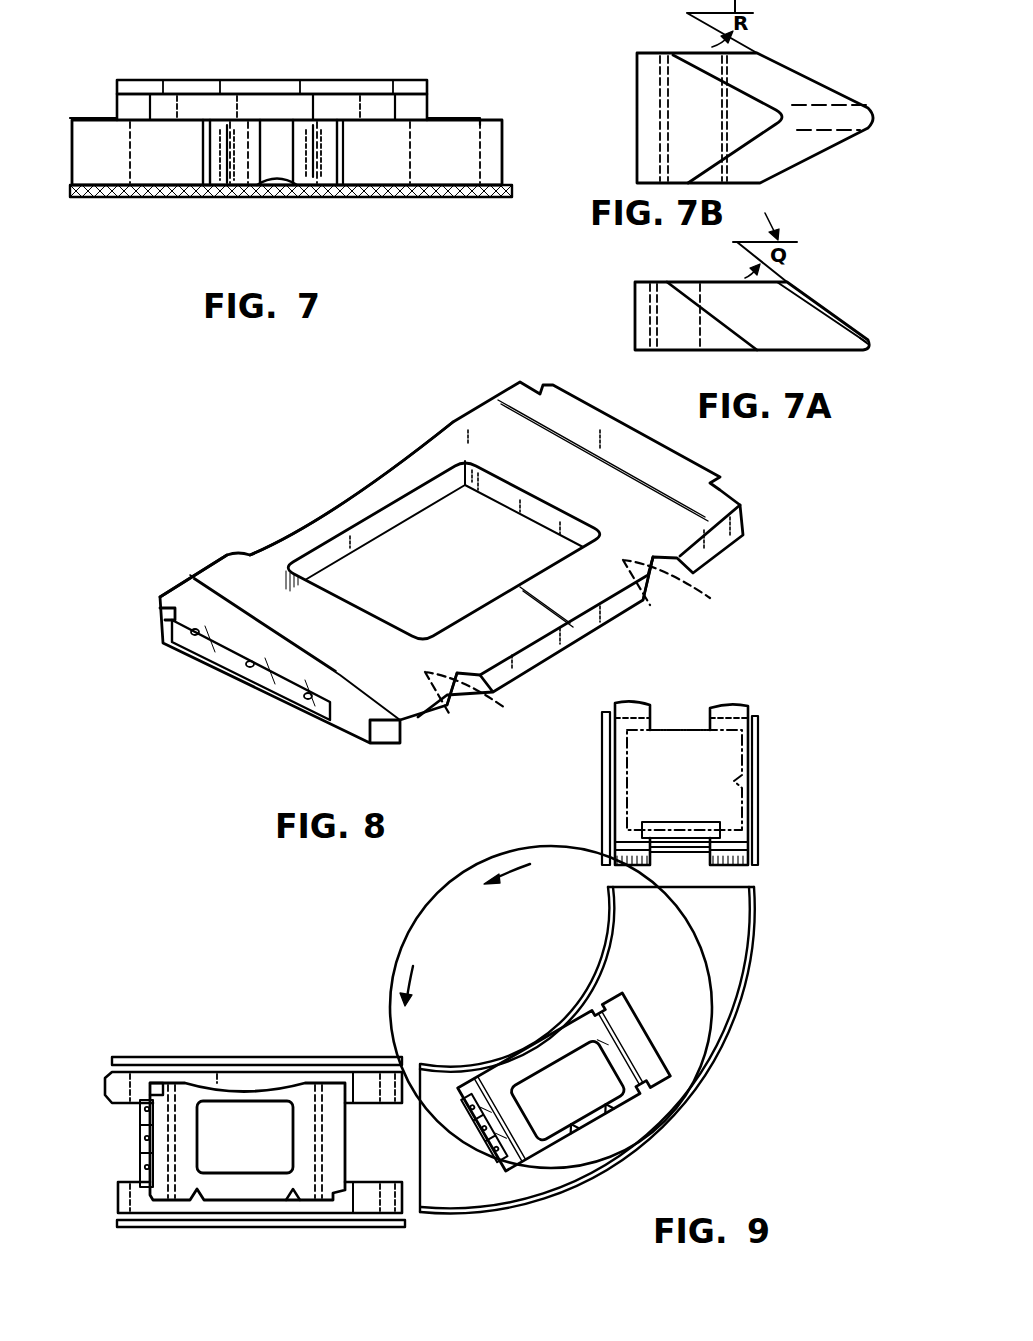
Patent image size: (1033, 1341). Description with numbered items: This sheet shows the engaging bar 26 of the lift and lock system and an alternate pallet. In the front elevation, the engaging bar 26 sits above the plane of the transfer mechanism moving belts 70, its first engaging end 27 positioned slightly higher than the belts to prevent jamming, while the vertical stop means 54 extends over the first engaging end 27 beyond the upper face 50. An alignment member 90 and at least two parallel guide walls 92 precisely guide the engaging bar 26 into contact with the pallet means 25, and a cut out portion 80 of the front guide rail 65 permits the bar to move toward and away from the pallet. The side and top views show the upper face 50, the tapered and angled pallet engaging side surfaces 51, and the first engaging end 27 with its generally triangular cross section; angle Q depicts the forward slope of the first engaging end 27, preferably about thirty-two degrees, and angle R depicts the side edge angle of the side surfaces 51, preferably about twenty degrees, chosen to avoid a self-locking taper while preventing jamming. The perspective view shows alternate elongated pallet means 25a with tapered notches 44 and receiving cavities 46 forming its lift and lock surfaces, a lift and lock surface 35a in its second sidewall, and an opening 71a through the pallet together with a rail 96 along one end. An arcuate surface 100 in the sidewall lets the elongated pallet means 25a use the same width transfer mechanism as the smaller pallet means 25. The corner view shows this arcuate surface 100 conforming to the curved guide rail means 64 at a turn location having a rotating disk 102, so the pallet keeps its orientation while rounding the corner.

In FIG. 9, the pallet means 25 is at (660, 795).
In FIG. 8, the alternate embodiment pallet means 25a is at (283, 605).
In FIG. 9, the alternate embodiment pallet means 25a is at (277, 1194).
In FIG. 7, the engaging bar 26 is at (325, 130).
In FIG. 7B, the engaging bar 26 is at (647, 83).
In FIG. 7A, the engaging bar 26 is at (645, 322).
In FIG. 7B, the first engaging end 27 is at (872, 122).
In FIG. 7A, the first engaging end 27 is at (872, 346).
In FIG. 8, the lift and lock surface 35a is at (218, 560).
In FIG. 8, the tapered notches 44 is at (657, 587).
In FIG. 8, the receiving cavities 46 is at (582, 648).
In FIG. 7A, the upper face 50 is at (680, 282).
In FIG. 7, the pallet engaging side surfaces 51 is at (227, 183).
In FIG. 7B, the pallet engaging side surfaces 51 is at (785, 73).
In FIG. 7A, the pallet engaging side surfaces 51 is at (785, 317).
In FIG. 7, the vertical stop means 54 is at (265, 105).
In FIG. 9, the guide rail means 64 is at (758, 812).
In FIG. 7, the front guide rail 65 is at (492, 123).
In FIG. 7, the transfer mechanism moving belts 70 is at (112, 198).
In FIG. 9, the transfer mechanism moving belts 70 is at (740, 732).
In FIG. 8, the opening 71a is at (450, 577).
In FIG. 7, the cut out portion 80 is at (345, 197).
In FIG. 7, the alignment member 90 is at (393, 80).
In FIG. 7, the guide walls 92 is at (93, 118).
In FIG. 8, the rail bar 96 is at (285, 688).
In FIG. 9, the rail bar 96 is at (146, 1143).
In FIG. 8, the arcuate surface 100 is at (338, 510).
In FIG. 9, the arcuate surface 100 is at (551, 1046).
In FIG. 9, the rotating disk 102 is at (393, 957).